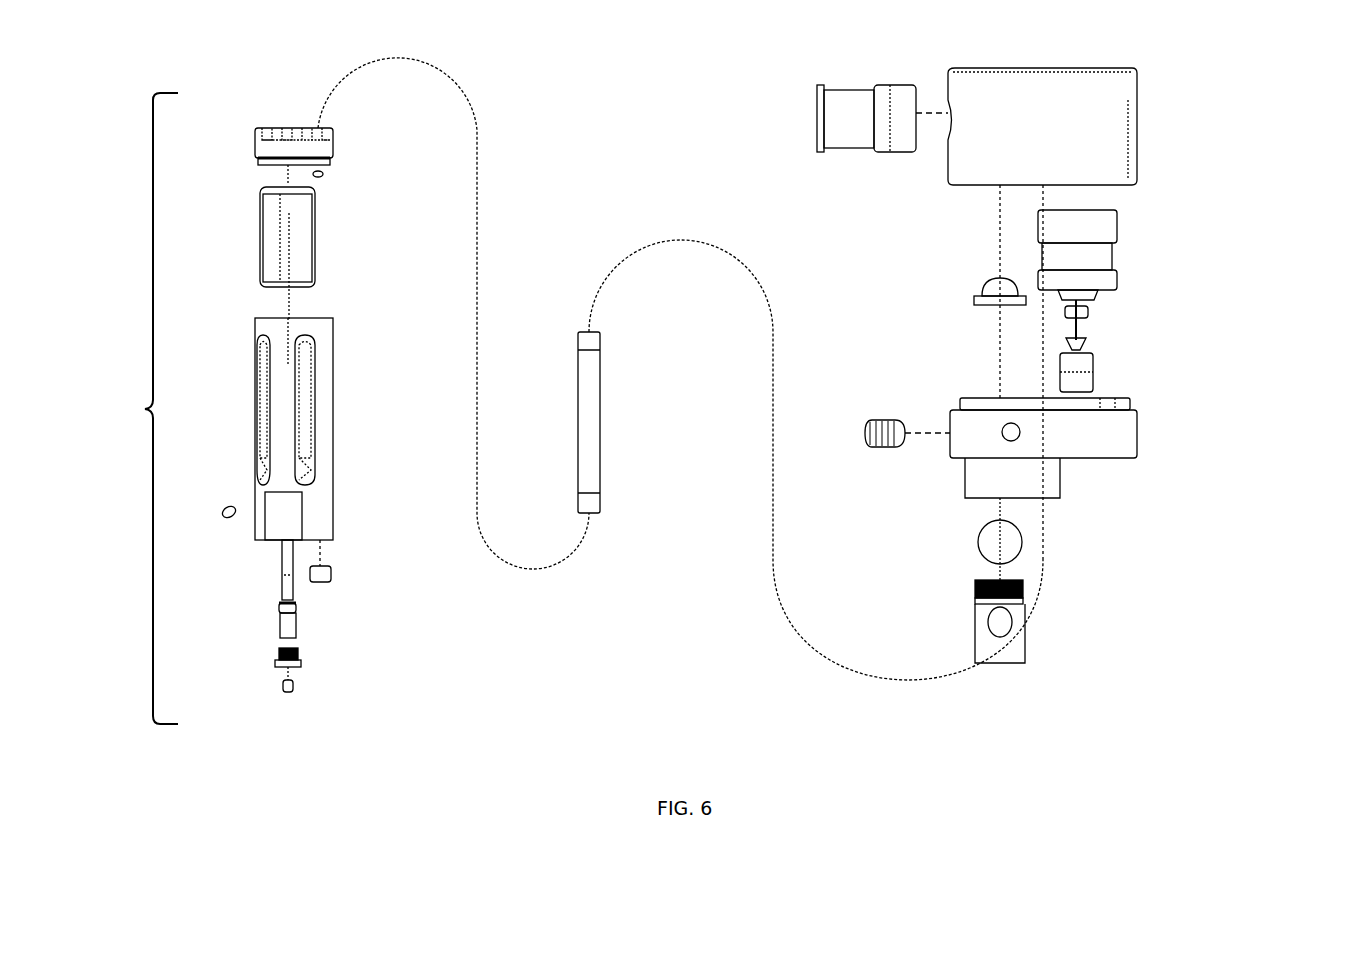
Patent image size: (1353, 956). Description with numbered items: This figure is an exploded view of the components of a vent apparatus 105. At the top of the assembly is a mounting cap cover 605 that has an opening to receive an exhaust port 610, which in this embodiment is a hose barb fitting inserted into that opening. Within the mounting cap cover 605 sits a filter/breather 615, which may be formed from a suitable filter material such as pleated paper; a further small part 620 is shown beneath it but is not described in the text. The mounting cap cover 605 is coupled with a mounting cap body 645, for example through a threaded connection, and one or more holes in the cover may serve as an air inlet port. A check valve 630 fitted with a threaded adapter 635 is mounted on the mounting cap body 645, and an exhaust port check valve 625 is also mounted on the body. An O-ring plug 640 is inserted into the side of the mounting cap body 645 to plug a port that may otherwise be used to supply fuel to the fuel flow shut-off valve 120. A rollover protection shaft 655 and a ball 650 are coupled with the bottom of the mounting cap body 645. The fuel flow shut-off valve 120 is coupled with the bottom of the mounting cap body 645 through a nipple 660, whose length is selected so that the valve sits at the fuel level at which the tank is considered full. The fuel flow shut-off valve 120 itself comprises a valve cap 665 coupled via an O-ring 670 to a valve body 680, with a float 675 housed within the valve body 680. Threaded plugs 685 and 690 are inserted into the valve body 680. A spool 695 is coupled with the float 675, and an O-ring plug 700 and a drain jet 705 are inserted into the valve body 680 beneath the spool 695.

The vent apparatus 105 is at (1216, 770).
The fuel flow shut-off valve 120 is at (142, 408).
The mounting cap cover 605 is at (1073, 113).
The exhaust port 610 is at (850, 120).
The filter/breather 615 is at (1085, 255).
The flange 620 is at (1082, 312).
The exhaust port check valve 625 is at (1000, 290).
The check valve 630 is at (1083, 343).
The threaded adapter 635 is at (1083, 370).
The O-ring plug 640 is at (880, 422).
The mounting cap body 645 is at (1050, 445).
The ball 650 is at (1012, 545).
The rollover protection shaft 655 is at (1010, 648).
The nipple 660 is at (595, 378).
The valve cap 665 is at (280, 148).
The O-ring 670 is at (324, 176).
The float 675 is at (302, 223).
The valve body 680 is at (326, 508).
The threaded plug 685 is at (226, 519).
The threaded plug 690 is at (333, 580).
The spool 695 is at (298, 622).
The O-ring plug 700 is at (300, 660).
The drain jet 705 is at (292, 693).